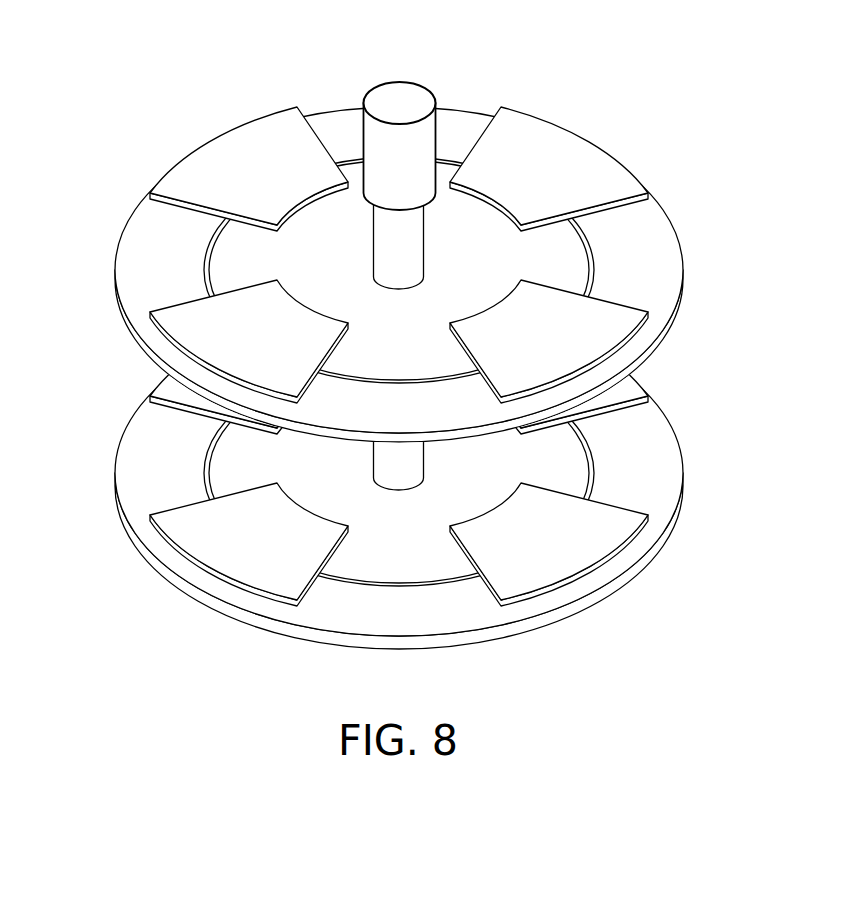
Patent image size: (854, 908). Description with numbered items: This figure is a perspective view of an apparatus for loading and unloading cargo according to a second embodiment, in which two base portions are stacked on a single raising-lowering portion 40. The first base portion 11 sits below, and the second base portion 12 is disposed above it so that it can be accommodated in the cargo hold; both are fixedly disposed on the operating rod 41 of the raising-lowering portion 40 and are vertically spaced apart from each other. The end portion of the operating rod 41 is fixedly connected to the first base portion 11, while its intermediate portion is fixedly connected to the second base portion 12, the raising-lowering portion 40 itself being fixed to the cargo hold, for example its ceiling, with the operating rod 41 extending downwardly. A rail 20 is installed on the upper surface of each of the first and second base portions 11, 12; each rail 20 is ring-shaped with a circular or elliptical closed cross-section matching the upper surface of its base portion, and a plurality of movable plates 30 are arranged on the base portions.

The first base portion 11 is at (127, 449).
The second base portion 12 is at (648, 268).
The rail 20 is at (595, 246).
The movable plates 30 is at (603, 330).
The raising-lowering portion 40 is at (400, 94).
The operating rod 41 is at (418, 249).